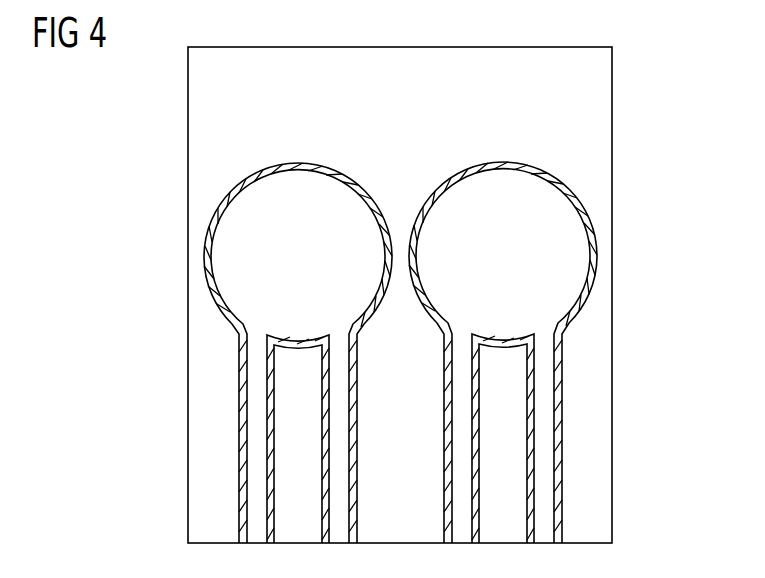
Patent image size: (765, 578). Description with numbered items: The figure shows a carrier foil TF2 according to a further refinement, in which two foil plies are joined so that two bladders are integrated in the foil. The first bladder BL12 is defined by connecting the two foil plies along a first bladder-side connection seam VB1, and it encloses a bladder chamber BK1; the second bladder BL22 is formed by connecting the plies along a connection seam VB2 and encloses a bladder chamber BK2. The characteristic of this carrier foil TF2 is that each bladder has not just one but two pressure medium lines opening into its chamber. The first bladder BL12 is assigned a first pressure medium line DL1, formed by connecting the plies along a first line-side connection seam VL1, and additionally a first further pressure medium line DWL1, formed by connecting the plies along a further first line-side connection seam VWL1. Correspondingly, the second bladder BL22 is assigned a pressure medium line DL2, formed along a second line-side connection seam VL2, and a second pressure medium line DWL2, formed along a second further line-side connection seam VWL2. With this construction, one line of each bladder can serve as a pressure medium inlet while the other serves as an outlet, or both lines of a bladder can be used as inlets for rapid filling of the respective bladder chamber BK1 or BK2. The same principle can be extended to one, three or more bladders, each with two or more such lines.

The carrier foil TF2 is at (590, 90).
The first bladder-side connection seam VB1 is at (587, 208).
The connection seam of the second bladder VB2 is at (218, 213).
The first bladder BL12 is at (588, 247).
The second bladder BL22 is at (210, 250).
The bladder chamber of the first bladder BK1 is at (532, 263).
The bladder chamber of the second bladder BK2 is at (265, 267).
The first further pressure medium line DWL1 is at (543, 405).
The second pressure medium line DWL2 is at (338, 403).
The further first line-side connection seam VWL1 is at (558, 440).
The second further line-side connection seam VWL2 is at (323, 432).
The first pressure medium line DL1 is at (462, 478).
The first pressure medium line of the second bladder DL2 is at (257, 483).
The first line-side connection seam VL1 is at (477, 508).
The second line-side connection seam VL2 is at (242, 517).